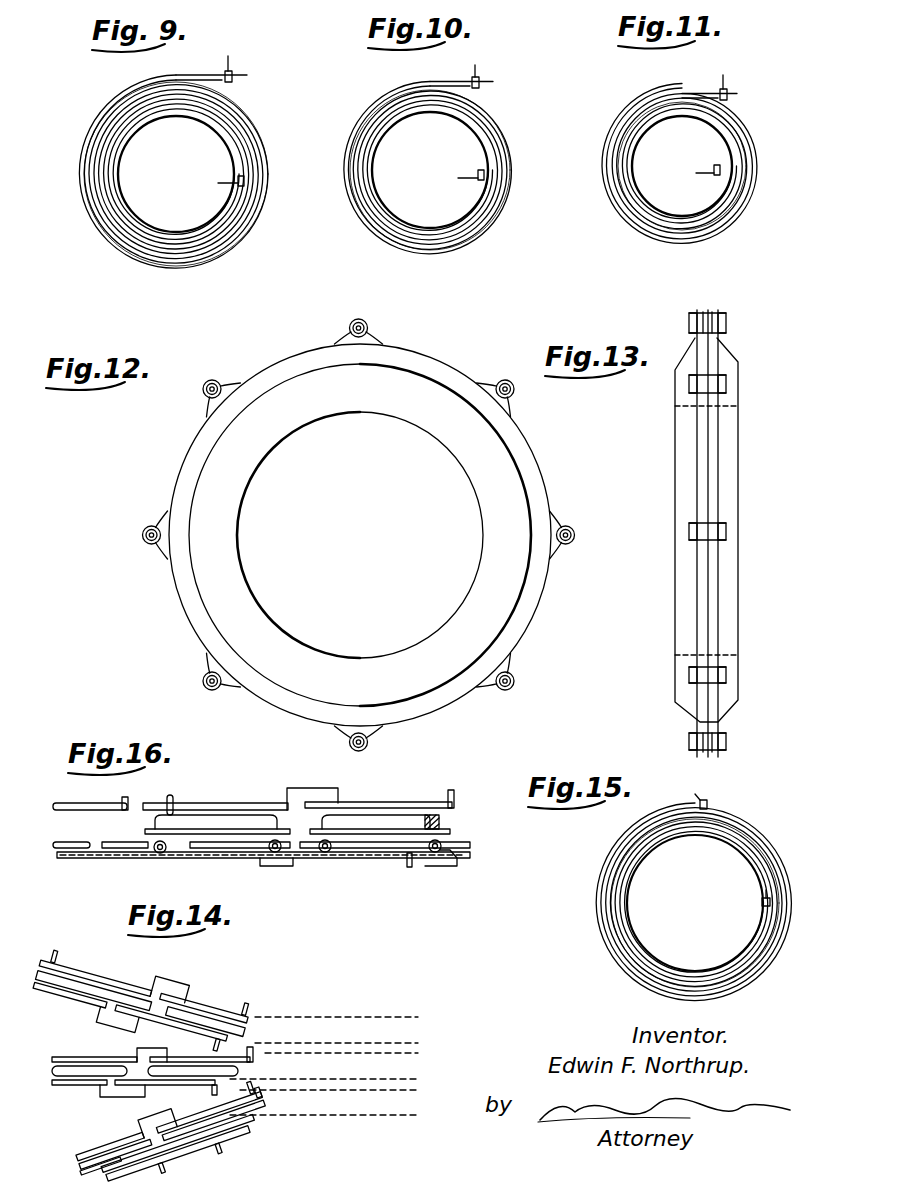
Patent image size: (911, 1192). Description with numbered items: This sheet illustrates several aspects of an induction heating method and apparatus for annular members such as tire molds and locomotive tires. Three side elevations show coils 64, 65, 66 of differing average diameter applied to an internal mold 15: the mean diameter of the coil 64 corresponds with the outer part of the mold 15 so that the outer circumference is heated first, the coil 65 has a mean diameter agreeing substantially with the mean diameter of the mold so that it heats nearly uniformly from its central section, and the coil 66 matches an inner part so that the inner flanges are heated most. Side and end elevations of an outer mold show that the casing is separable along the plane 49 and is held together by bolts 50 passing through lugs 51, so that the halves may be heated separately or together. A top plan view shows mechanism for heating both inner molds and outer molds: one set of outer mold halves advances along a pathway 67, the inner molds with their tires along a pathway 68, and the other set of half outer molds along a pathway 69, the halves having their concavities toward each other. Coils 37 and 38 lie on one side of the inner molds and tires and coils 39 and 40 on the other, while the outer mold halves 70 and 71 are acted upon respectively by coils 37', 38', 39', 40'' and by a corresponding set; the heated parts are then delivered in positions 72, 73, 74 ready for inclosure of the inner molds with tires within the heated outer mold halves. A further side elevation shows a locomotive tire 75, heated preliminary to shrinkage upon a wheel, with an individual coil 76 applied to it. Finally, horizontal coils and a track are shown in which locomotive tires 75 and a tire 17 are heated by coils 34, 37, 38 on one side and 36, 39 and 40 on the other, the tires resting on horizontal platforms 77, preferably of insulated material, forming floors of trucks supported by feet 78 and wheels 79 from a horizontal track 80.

In FIG. 9, the internal mold 15 is at (229, 137).
In FIG. 10, the internal mold 15 is at (492, 126).
In FIG. 11, the internal mold 15 is at (752, 141).
In FIG. 14, the tire 17 is at (240, 1071).
In FIG. 16, the coil 34 is at (75, 808).
In FIG. 16, the coil 36 is at (77, 849).
In FIG. 16, the coil 37 is at (240, 791).
In FIG. 14, the coil 37 is at (94, 1047).
In FIG. 14, the coil 37' is at (94, 977).
In FIG. 16, the coil 38 is at (379, 788).
In FIG. 14, the coil 38 is at (201, 1050).
In FIG. 14, the coil 38' is at (204, 1008).
In FIG. 16, the coil 39 is at (312, 864).
In FIG. 14, the coil 39 is at (133, 1095).
In FIG. 14, the coil 39' is at (130, 1011).
In FIG. 16, the coil 40 is at (400, 856).
In FIG. 14, the coil 40 is at (203, 1101).
In FIG. 14, the coil 40'' is at (201, 1043).
In FIG. 13, the plane 49 is at (710, 432).
In FIG. 12, the bolts 50 is at (368, 330).
In FIG. 13, the bolts 50 is at (722, 320).
In FIG. 12, the lugs 51 is at (349, 328).
In FIG. 13, the lugs 51 is at (703, 312).
In FIG. 15, the lugs 51 is at (703, 798).
In FIG. 9, the coil 64 is at (243, 230).
In FIG. 10, the coil 65 is at (420, 240).
In FIG. 11, the coil 66 is at (668, 225).
In FIG. 14, the pathway 67 is at (160, 973).
In FIG. 14, the pathway 68 is at (110, 1058).
In FIG. 14, the pathway 69 is at (120, 1147).
In FIG. 14, the outer mold half 70 is at (66, 946).
In FIG. 14, the outer mold half 71 is at (100, 1170).
In FIG. 14, the delivery position 72 is at (362, 1020).
In FIG. 14, the delivery position 73 is at (372, 1056).
In FIG. 14, the delivery position 74 is at (378, 1093).
In FIG. 15, the locomotive tire 75 is at (757, 824).
In FIG. 16, the locomotive tire 75 is at (215, 822).
In FIG. 15, the coil 76 is at (630, 962).
In FIG. 16, the horizontal platform 77 is at (441, 823).
In FIG. 16, the feet 78 is at (442, 836).
In FIG. 16, the wheels 79 is at (455, 852).
In FIG. 16, the horizontal track 80 is at (130, 852).